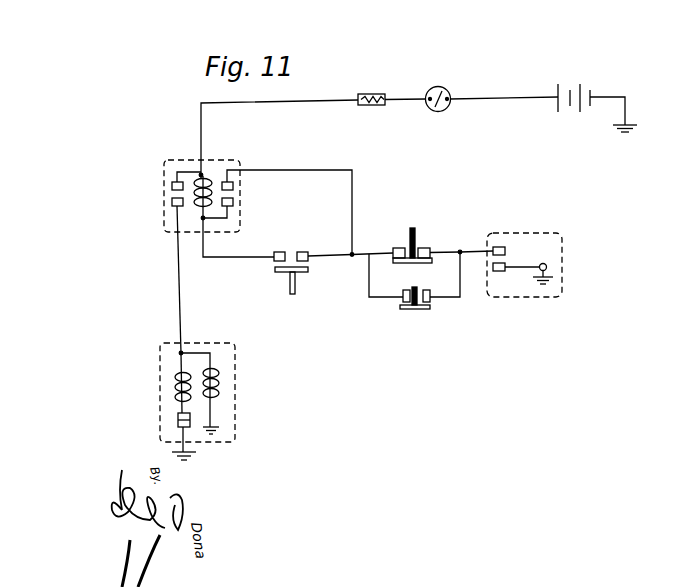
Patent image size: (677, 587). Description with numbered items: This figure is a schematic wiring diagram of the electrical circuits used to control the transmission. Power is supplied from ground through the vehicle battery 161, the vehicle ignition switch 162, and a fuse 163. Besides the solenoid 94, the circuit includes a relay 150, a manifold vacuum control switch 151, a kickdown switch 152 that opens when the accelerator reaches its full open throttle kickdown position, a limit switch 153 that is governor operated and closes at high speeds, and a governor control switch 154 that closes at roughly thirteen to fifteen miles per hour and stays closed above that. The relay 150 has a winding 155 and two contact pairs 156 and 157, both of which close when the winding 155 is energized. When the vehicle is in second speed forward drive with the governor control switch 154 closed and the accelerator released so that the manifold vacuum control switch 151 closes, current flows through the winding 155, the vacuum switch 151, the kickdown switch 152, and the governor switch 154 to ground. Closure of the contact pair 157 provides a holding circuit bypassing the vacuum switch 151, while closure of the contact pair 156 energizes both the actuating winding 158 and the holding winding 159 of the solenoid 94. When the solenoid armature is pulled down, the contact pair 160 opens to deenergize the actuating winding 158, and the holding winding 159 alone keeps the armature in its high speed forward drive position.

The solenoid 94 is at (236, 407).
The relay 150 is at (208, 159).
The manifold vacuum control switch 151 is at (281, 282).
The kickdown switch 152 is at (418, 246).
The limit switch 153 is at (435, 300).
The governor control switch 154 is at (508, 259).
The winding 155 is at (197, 207).
The contact pair 156 is at (166, 195).
The contact pair 157 is at (238, 194).
The actuating winding 158 is at (173, 384).
The holding winding 159 is at (223, 374).
The contact pair 160 is at (178, 418).
The vehicle battery 161 is at (575, 83).
The ignition switch 162 is at (450, 88).
The fuse 163 is at (372, 92).